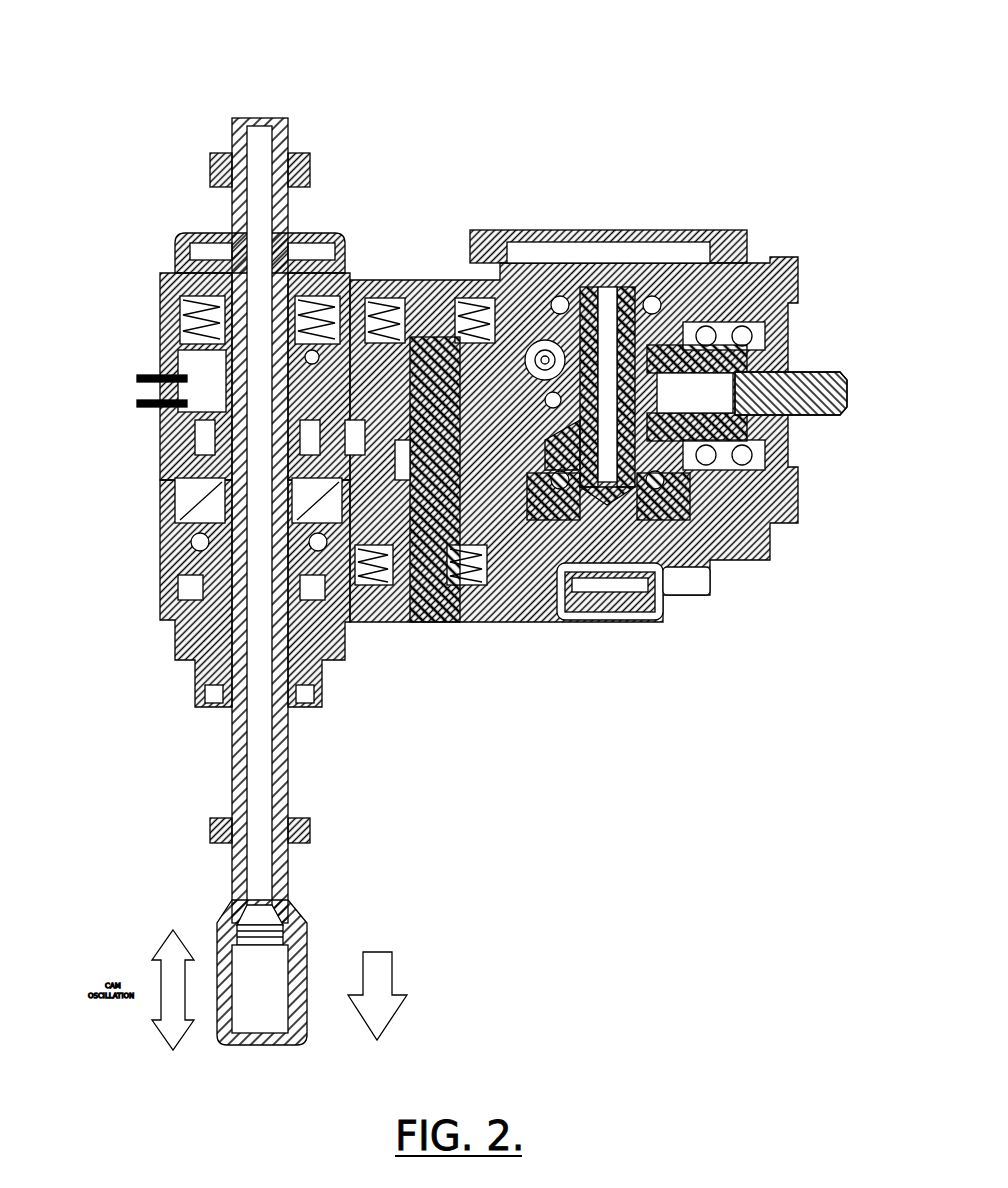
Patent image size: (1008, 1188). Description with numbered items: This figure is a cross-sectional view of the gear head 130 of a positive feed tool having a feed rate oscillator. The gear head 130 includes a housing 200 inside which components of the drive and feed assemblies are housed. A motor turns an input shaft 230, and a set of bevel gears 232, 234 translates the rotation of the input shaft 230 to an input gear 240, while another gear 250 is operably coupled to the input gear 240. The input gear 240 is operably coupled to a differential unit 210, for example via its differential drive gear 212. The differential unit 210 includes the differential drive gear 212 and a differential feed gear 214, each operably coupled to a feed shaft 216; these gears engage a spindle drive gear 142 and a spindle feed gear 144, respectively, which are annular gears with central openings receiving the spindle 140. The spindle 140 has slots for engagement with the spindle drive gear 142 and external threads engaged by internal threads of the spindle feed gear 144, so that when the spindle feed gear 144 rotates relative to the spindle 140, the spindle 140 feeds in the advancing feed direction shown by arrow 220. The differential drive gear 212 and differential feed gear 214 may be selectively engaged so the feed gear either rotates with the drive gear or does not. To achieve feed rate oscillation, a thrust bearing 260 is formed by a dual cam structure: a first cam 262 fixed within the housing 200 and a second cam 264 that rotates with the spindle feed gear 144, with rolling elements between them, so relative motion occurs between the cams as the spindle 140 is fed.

The gear head 130 is at (87, 47).
The spindle 140 is at (233, 581).
The spindle drive gear 142 is at (201, 592).
The spindle feed gear 144 is at (215, 356).
The housing 200 is at (574, 411).
The differential unit 210 is at (514, 689).
The differential drive gear 212 is at (604, 561).
The differential feed gear 214 is at (391, 350).
The feed shaft 216 is at (405, 497).
The arrow 220 is at (408, 983).
The input shaft 230 is at (817, 369).
The bevel gear 232 is at (734, 448).
The bevel gear 234 is at (727, 481).
The input gear 240 is at (653, 468).
The gear 250 is at (634, 565).
The thrust bearing 260 is at (150, 369).
The first cam 262 is at (138, 379).
The second cam 264 is at (140, 404).